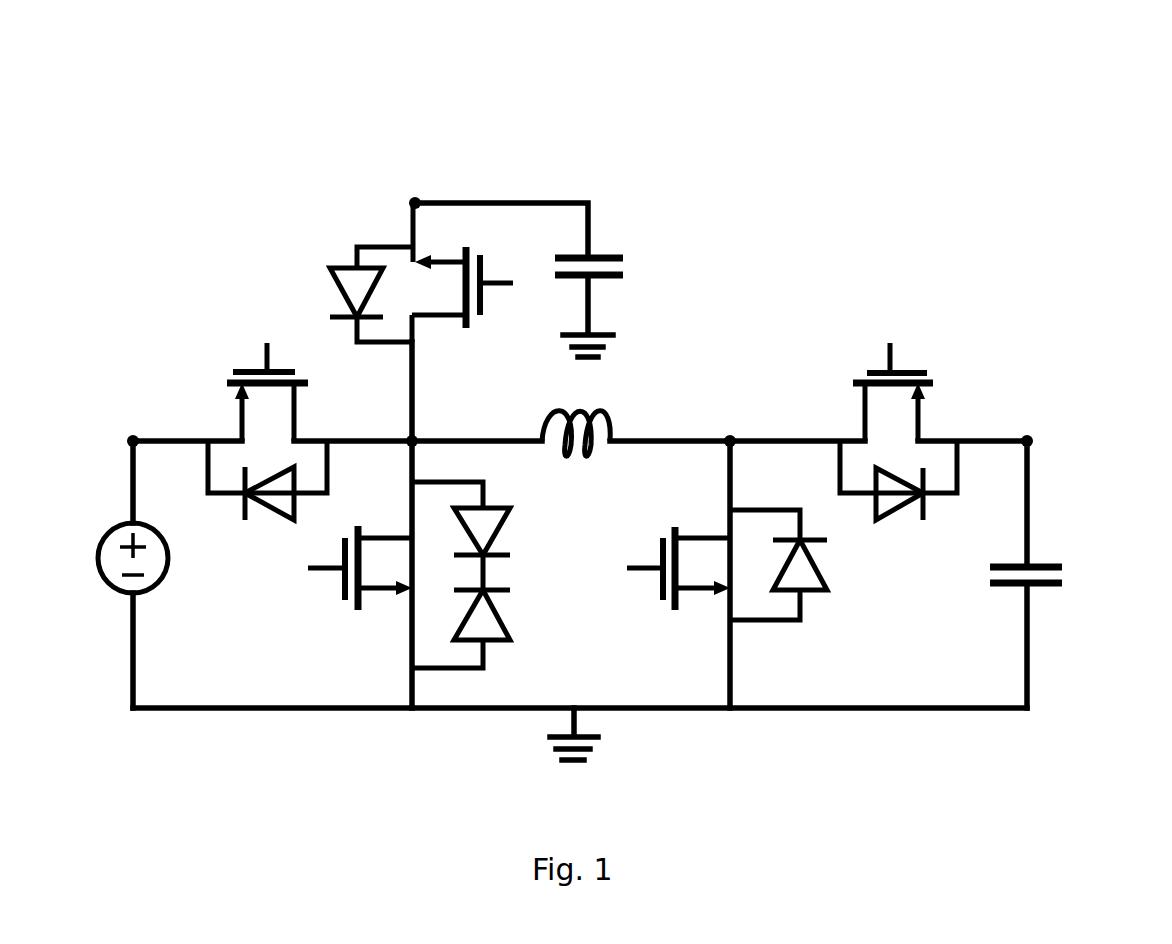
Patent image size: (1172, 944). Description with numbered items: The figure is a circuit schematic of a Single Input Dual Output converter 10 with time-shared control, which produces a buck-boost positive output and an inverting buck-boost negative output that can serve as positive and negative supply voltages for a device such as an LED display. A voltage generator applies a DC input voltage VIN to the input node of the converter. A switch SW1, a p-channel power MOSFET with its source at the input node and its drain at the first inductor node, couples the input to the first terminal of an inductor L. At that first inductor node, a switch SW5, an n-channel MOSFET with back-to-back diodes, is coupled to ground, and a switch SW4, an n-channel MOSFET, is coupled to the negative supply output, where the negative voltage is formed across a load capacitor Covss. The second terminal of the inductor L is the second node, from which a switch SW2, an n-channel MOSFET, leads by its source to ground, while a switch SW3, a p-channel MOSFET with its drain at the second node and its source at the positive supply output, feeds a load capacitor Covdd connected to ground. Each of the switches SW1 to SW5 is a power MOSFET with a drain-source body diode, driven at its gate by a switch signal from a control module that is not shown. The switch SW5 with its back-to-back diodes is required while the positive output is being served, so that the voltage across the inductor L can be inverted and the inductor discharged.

The converter 10 is at (310, 162).
The switch SW1 is at (237, 386).
The switch SW2 is at (682, 592).
The switch SW3 is at (855, 381).
The switch SW4 is at (485, 309).
The switch SW5 is at (362, 603).
The inductor L is at (576, 456).
The input voltage VIN is at (105, 558).
The load capacitor Covss is at (558, 280).
The load capacitor Covdd is at (1069, 574).